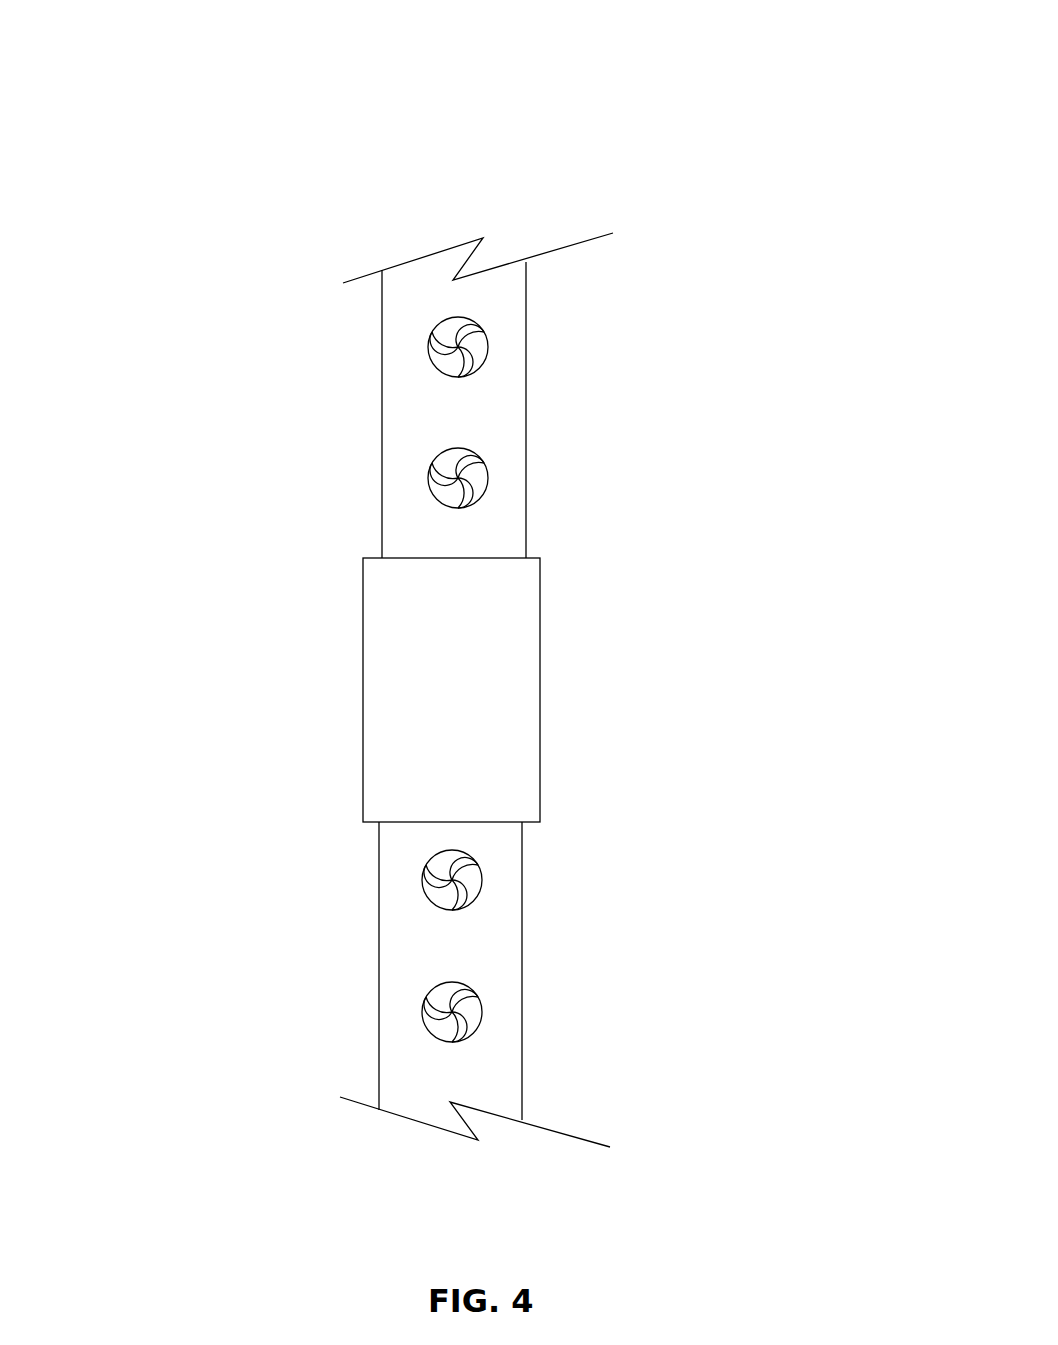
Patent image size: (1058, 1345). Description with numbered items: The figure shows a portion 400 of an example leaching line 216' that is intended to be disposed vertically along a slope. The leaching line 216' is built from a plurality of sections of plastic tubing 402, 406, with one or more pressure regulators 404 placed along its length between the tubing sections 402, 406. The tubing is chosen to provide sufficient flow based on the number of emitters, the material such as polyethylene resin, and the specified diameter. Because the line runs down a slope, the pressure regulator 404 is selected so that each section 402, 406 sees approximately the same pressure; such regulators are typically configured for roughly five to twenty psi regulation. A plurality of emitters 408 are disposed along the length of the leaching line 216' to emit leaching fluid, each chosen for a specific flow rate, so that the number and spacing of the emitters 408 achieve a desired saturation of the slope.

The structure 400 is at (872, 30).
The leaching line 216' is at (111, 196).
The section of plastic tubing 402 is at (535, 423).
The pressure regulator 404 is at (548, 679).
The section of plastic tubing 406 is at (524, 983).
The emitter 408 is at (428, 343).